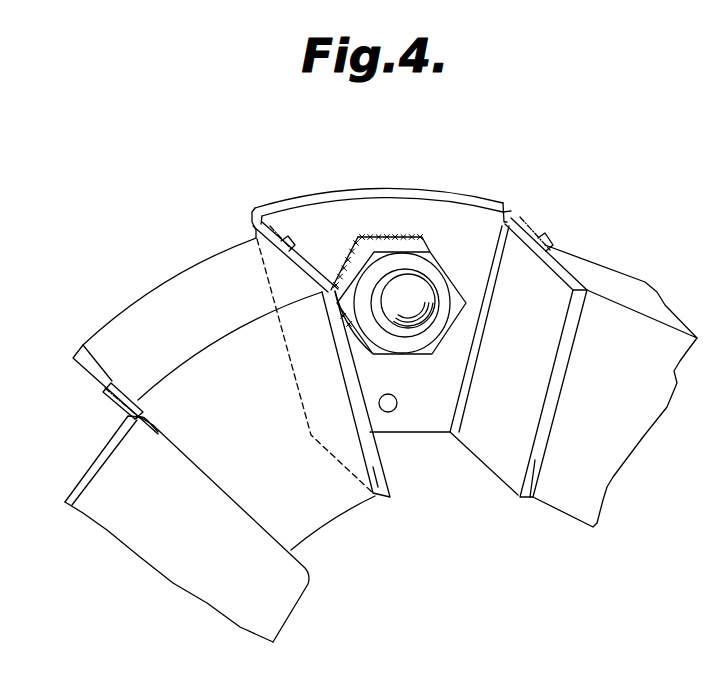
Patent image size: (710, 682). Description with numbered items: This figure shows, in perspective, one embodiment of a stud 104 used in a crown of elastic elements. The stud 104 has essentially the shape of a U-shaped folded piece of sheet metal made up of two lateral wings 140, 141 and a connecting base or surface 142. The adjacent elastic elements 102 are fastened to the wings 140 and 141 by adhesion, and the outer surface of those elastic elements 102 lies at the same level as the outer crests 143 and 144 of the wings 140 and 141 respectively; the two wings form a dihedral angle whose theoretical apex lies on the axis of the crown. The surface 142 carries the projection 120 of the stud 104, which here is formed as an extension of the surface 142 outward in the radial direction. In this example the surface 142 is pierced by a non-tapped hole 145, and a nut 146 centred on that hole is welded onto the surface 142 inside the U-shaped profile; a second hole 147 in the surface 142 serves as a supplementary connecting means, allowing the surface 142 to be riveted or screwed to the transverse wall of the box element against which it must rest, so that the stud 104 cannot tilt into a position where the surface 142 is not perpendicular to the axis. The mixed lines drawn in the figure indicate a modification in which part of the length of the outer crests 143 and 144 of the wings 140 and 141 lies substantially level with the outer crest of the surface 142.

The elastic elements 102 is at (167, 300).
The stud 104 is at (419, 334).
The projection 120 is at (382, 200).
The lateral wing 140 is at (525, 499).
The lateral wing 141 is at (387, 499).
The surface 142 is at (305, 227).
The outer crest 143 is at (567, 277).
The outer crest 144 is at (302, 268).
The non-tapped hole 145 is at (395, 297).
The nut 146 is at (425, 338).
The hole 147 is at (392, 411).